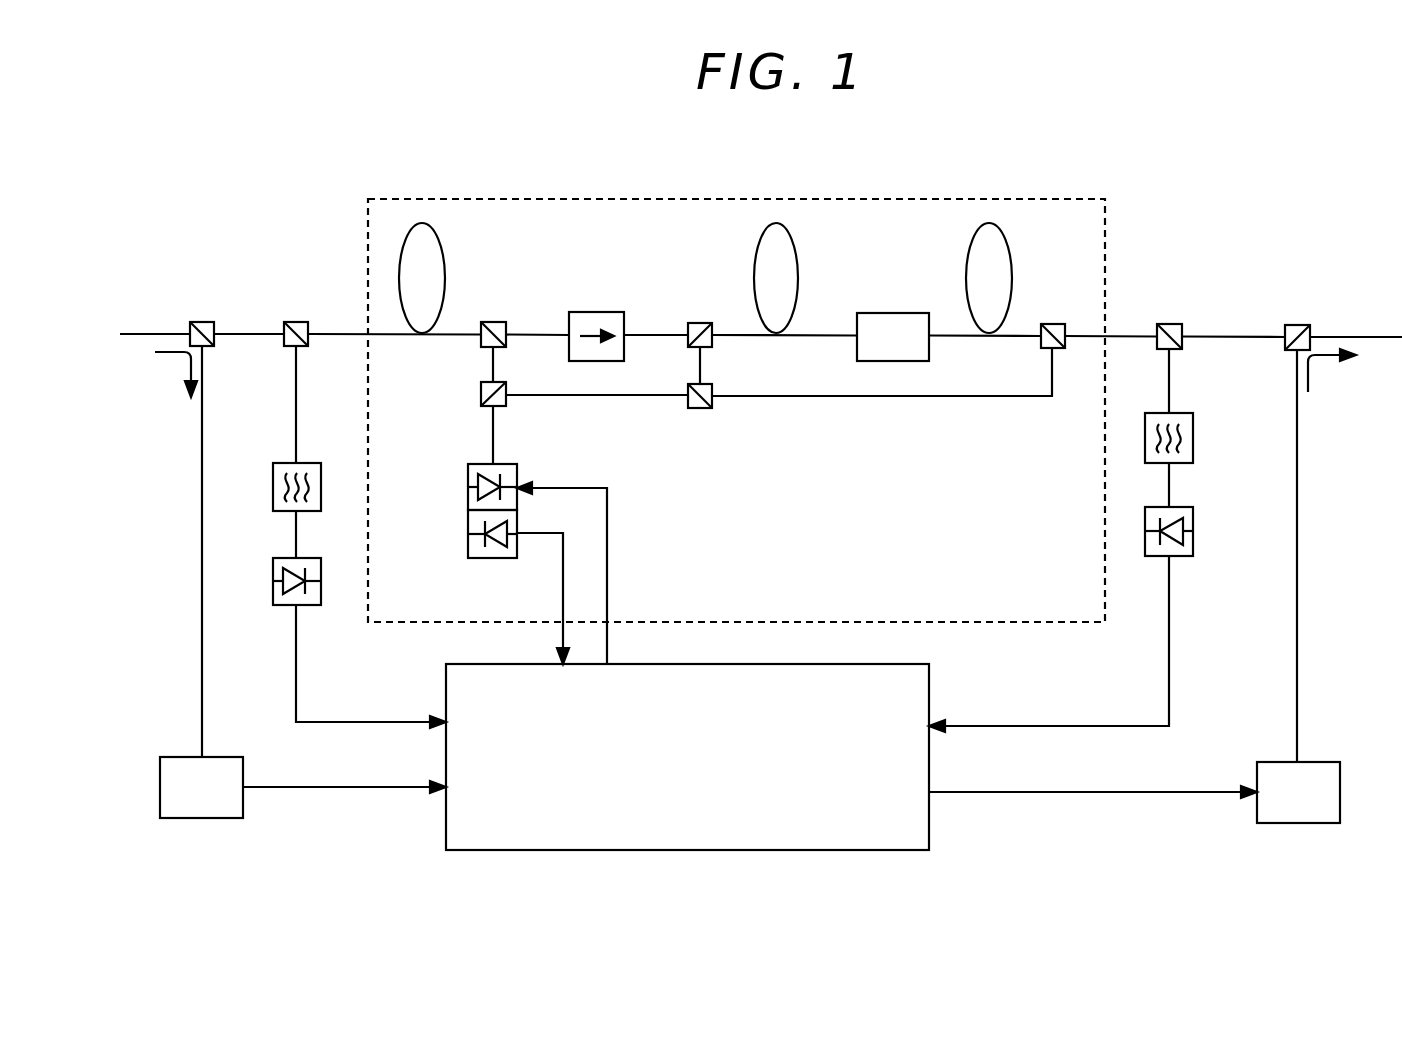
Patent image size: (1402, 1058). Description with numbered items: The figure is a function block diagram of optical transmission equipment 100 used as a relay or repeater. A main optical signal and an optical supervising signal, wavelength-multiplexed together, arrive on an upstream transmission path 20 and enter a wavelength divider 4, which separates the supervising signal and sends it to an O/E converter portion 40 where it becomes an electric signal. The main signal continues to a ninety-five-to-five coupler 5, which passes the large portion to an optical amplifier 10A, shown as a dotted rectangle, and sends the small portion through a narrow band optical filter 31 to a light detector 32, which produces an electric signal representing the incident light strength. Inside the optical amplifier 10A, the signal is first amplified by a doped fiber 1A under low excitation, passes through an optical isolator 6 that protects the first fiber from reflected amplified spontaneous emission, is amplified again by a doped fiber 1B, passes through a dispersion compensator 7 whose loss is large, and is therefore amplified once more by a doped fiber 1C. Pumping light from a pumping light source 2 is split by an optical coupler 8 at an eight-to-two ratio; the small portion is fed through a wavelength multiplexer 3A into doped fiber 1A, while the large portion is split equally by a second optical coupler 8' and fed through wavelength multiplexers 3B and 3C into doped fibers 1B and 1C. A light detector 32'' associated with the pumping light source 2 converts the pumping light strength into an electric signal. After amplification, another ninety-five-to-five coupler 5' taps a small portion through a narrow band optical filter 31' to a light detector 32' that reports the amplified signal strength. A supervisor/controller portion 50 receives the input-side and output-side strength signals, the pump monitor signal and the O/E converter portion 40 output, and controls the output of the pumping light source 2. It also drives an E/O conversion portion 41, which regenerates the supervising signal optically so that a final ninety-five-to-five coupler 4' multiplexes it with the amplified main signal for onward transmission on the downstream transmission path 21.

The doped fiber 1A is at (445, 241).
The doped fiber 1B is at (798, 241).
The doped fiber 1C is at (1012, 241).
The pumping light source 2 is at (468, 477).
The wavelength multiplexer 3A is at (497, 322).
The wavelength multiplexer 3B is at (700, 323).
The wavelength multiplexer 3C is at (1052, 324).
The wavelength divider 4 is at (202, 306).
The 95:5 coupler 4' is at (1299, 310).
The 95:5 coupler 5 is at (296, 306).
The 95:5 coupler 5' is at (1171, 310).
The optical isolator 6 is at (599, 312).
The dispersion compensator 7 is at (891, 313).
The optical coupler 8 is at (471, 391).
The optical coupler 8' is at (702, 424).
The optical amplifier 10A is at (1161, 227).
The transmission path 20 is at (153, 332).
The transmission path 21 is at (1356, 336).
The narrow band optical filter 31 is at (268, 486).
The narrow band optical filter 31' is at (1205, 436).
The light detector 32 is at (268, 579).
The light detector 32' is at (1205, 531).
The light detector 32'' is at (487, 585).
The O/E converter portion 40 is at (216, 757).
The E/O conversion portion 41 is at (1313, 762).
The supervisor/controller portion 50 is at (930, 688).
The optical transmission equipment 100 is at (1308, 213).